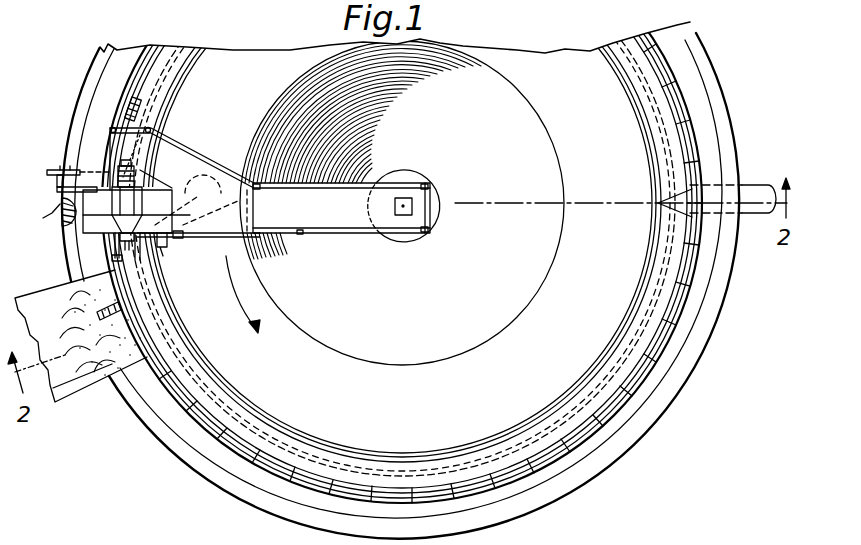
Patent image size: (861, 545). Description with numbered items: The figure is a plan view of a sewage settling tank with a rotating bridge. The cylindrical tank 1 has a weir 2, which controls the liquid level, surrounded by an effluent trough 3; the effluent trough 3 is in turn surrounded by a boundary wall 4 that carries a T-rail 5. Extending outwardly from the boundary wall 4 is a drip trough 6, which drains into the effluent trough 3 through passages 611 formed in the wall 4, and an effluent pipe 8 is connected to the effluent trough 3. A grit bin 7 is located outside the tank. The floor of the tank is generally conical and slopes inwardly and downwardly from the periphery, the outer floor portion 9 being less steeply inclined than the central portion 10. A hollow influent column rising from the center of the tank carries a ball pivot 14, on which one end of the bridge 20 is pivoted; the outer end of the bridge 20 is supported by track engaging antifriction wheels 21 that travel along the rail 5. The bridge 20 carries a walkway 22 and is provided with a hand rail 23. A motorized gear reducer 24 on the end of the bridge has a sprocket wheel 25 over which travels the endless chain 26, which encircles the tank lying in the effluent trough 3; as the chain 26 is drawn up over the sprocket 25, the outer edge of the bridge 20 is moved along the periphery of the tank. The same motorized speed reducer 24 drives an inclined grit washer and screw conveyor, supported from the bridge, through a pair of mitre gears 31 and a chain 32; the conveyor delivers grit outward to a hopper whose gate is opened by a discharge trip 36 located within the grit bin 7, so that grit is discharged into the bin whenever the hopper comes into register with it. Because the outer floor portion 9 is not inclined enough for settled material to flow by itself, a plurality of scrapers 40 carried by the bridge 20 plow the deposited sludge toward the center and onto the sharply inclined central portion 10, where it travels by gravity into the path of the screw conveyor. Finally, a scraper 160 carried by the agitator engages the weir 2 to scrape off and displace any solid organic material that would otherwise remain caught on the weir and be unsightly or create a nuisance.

The cylindrical tank 1 is at (608, 474).
The weir 2 is at (644, 288).
The effluent trough 3 is at (667, 293).
The boundary wall 4 is at (677, 323).
The T-rail 5 is at (648, 367).
The drip trough 6 is at (635, 418).
The grit bin 7 is at (73, 377).
The effluent pipe 8 is at (760, 185).
The outer floor portion 9 is at (243, 63).
The central floor portion 10 is at (323, 87).
The ball pivot 14 is at (408, 240).
The bridge 20 is at (367, 235).
The track engaging antifriction wheels 21 is at (133, 100).
The walkway 22 is at (285, 215).
The hand rail 23 is at (208, 165).
The motorized gear reducer 24 is at (130, 200).
The sprocket wheel 25 is at (132, 178).
The endless chain 26 is at (233, 417).
The mitre gears 31 is at (48, 219).
The chain 32 is at (90, 172).
The discharge trip 36 is at (100, 312).
The scrapers 40 is at (194, 186).
The weir scraper 160 is at (166, 242).
The passages 611 is at (660, 84).